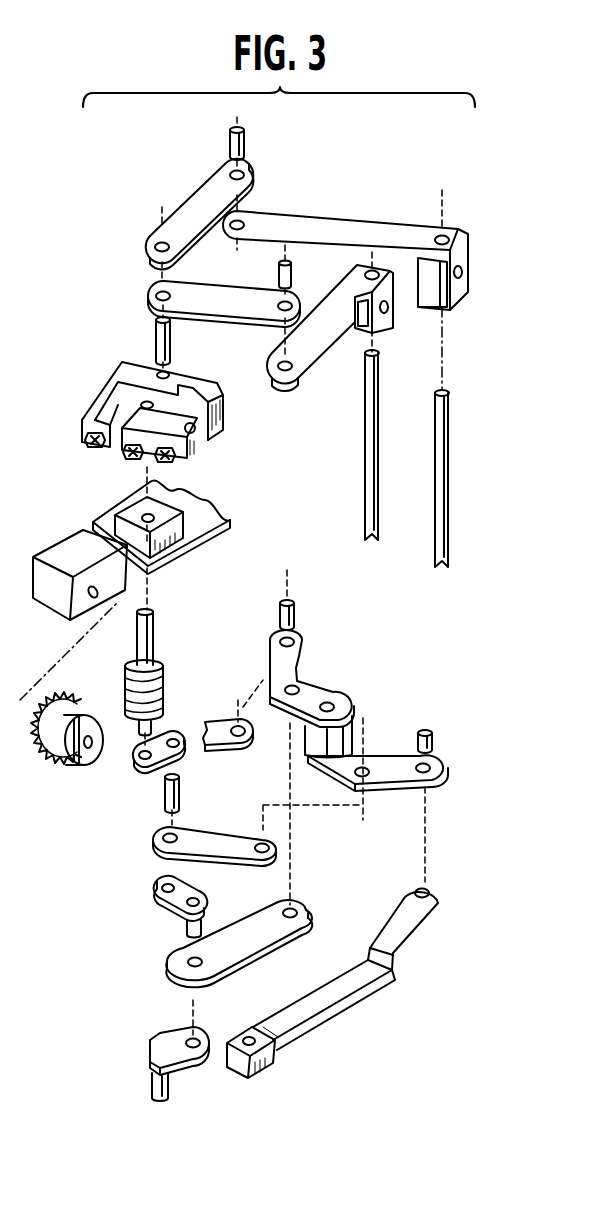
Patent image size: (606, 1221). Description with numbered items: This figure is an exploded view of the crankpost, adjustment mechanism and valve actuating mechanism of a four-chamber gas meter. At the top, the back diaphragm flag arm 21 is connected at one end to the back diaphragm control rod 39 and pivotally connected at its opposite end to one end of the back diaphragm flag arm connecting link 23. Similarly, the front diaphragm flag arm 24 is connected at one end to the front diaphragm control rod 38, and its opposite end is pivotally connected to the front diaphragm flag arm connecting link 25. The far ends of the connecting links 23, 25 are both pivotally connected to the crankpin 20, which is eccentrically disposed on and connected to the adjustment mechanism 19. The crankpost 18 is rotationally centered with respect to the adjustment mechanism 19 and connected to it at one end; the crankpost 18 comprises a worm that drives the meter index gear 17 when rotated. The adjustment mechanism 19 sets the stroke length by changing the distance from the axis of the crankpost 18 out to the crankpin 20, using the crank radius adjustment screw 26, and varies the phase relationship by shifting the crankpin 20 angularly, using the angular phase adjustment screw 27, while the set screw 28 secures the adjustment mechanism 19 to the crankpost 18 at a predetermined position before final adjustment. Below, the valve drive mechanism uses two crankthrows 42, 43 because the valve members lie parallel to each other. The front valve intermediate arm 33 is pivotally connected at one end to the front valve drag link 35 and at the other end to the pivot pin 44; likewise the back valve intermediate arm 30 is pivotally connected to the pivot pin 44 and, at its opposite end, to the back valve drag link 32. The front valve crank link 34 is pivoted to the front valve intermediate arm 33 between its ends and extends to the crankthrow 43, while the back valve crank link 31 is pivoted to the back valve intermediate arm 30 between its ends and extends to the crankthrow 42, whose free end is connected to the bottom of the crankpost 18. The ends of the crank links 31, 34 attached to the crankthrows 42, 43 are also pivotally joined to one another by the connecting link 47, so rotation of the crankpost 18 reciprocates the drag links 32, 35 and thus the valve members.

The meter index gear 17 is at (58, 753).
The crankpost 18 is at (153, 635).
The adjustment mechanism 19 is at (81, 386).
The crankpin 20 is at (172, 342).
The back diaphragm flag arm 21 is at (337, 220).
The back diaphragm flag arm connecting link 23 is at (200, 197).
The front diaphragm flag arm 24 is at (330, 353).
The front diaphragm flag arm connecting link 25 is at (257, 325).
The crank radius adjustment screw 26 is at (92, 452).
The angular phase adjustment screw 27 is at (166, 463).
The set screw 28 is at (133, 458).
The back valve intermediate arm 30 is at (447, 782).
The back valve crank link 31 is at (207, 827).
The back valve drag link 32 is at (337, 1020).
The front valve intermediate arm 33 is at (302, 641).
The front valve crank link 34 is at (165, 963).
The front valve drag link 35 is at (218, 722).
The front diaphragm control rod 38 is at (365, 462).
The back diaphragm control rod 39 is at (435, 532).
The crankthrow 42 is at (140, 770).
The crankthrow 43 is at (150, 1045).
The pivot pin 44 is at (337, 707).
The connecting link 47 is at (157, 907).